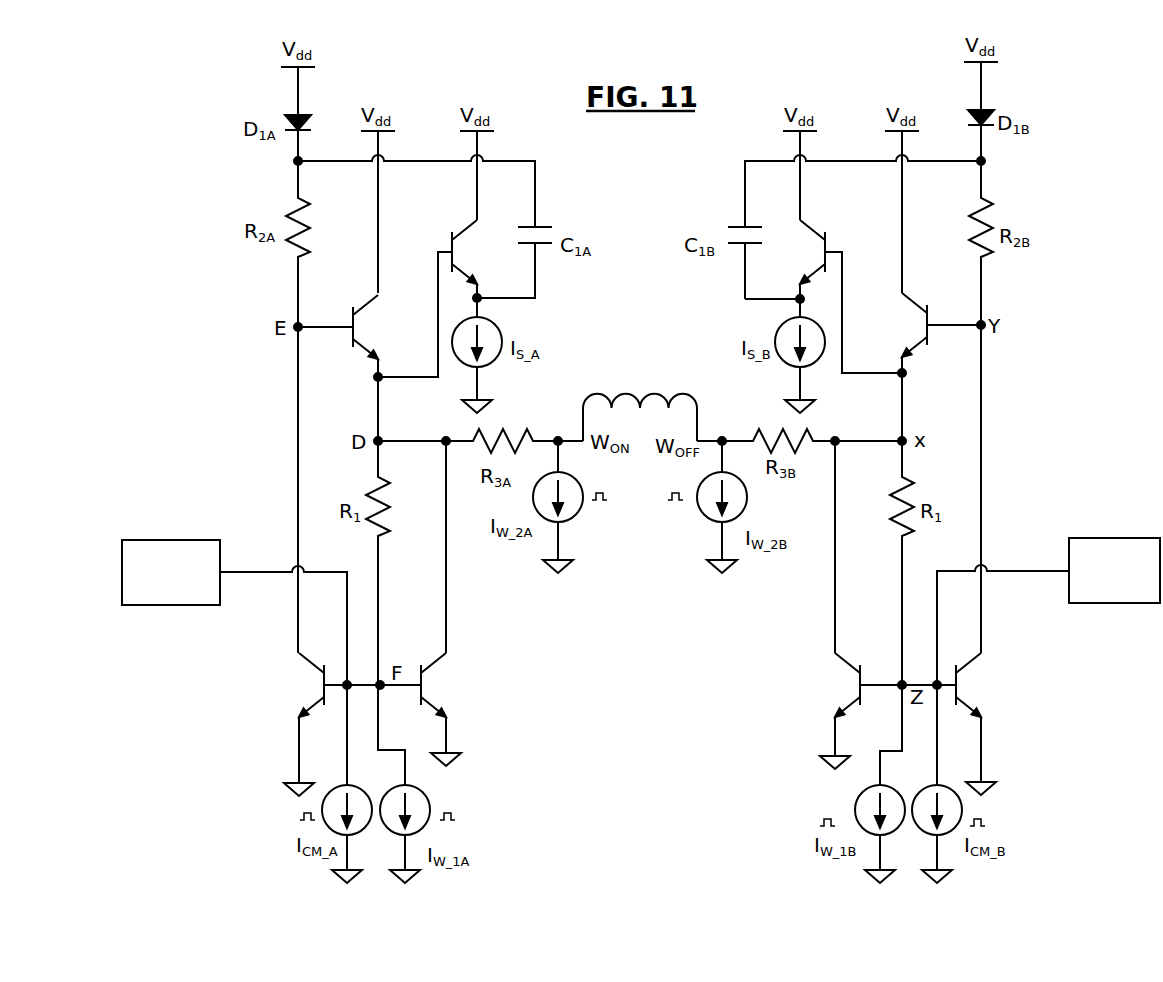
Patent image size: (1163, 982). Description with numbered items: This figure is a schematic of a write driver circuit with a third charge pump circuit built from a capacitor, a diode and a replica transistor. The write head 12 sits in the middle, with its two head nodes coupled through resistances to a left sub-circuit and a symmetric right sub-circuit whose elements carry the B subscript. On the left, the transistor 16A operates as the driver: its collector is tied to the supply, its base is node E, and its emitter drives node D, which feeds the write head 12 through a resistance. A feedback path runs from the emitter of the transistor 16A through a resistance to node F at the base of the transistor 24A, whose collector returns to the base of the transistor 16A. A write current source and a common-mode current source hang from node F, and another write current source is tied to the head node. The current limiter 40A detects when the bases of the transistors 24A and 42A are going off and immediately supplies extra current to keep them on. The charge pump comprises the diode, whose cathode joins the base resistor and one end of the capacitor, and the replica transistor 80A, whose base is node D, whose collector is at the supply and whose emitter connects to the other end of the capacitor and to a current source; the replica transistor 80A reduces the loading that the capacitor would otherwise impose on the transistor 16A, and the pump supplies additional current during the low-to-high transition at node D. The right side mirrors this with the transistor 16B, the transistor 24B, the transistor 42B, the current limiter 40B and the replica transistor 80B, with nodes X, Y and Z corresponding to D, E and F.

The write head 12 is at (639, 371).
The transistor 16A is at (372, 295).
The transistor 16B is at (915, 342).
The transistor 24A is at (311, 661).
The transistor 24B is at (975, 703).
The current limiter 40A is at (172, 605).
The current limiter 40B is at (1104, 538).
The transistor 42A is at (449, 661).
The transistor 42B is at (845, 665).
The replica transistor 80A is at (447, 241).
The replica transistor 80B is at (813, 225).